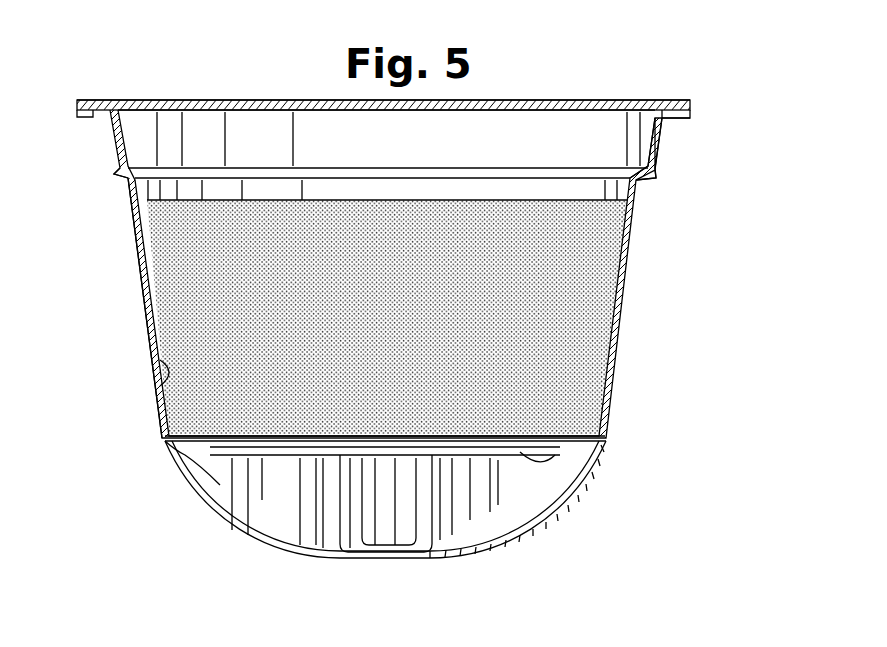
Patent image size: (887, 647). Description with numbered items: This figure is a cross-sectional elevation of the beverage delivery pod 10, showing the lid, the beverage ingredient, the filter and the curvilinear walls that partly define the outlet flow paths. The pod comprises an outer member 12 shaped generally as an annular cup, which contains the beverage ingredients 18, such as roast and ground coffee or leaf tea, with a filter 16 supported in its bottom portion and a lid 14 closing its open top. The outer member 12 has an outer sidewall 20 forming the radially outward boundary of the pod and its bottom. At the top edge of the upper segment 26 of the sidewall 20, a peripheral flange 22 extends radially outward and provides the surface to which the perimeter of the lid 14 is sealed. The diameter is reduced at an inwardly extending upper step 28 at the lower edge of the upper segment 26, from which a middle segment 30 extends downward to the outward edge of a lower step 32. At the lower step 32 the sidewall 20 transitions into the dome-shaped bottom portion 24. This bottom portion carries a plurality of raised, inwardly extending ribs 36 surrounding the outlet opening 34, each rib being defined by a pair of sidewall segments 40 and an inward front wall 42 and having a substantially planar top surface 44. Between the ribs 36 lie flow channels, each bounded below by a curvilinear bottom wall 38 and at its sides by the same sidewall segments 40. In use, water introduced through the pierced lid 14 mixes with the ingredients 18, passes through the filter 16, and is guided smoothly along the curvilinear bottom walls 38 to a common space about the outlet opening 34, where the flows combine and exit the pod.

The beverage delivery pod 10 is at (670, 78).
The outer member 12 is at (626, 268).
The lid 14 is at (520, 100).
The filter 16 is at (605, 387).
The beverage ingredients 18 is at (575, 326).
The outer sidewall 20 is at (143, 306).
The peripheral flange 22 is at (665, 115).
The dome-shaped bottom portion 24 is at (238, 508).
The upper segment 26 is at (645, 153).
The upper step 28 is at (127, 182).
The middle segment 30 is at (165, 381).
The lower step 32 is at (178, 445).
The outlet opening 34 is at (395, 565).
The ribs 36 is at (283, 528).
The curvilinear bottom wall 38 is at (553, 482).
The sidewall segments 40 is at (490, 507).
The inward front wall 42 is at (478, 510).
The top surface 44 is at (548, 458).